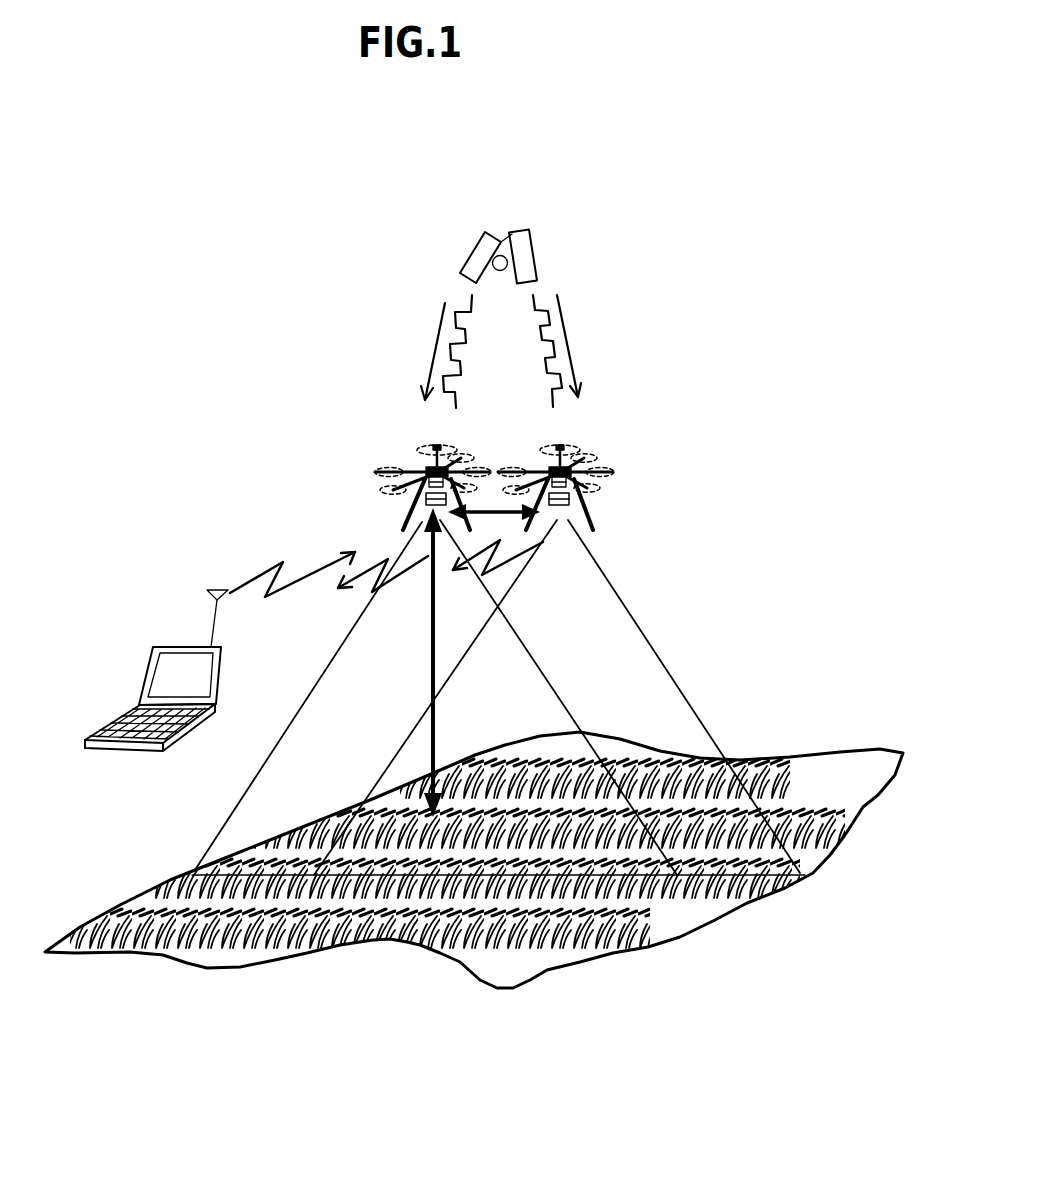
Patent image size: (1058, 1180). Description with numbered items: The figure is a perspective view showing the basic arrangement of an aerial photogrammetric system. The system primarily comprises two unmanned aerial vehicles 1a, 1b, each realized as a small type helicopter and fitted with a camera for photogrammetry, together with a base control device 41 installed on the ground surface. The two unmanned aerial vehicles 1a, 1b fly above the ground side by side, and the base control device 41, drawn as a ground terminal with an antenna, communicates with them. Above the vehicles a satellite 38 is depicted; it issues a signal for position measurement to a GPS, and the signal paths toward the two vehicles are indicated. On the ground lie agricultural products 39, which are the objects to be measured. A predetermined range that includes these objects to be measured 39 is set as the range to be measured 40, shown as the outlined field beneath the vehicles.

The unmanned aerial vehicle 1a is at (376, 439).
The unmanned aerial vehicle 1b is at (637, 450).
The satellite 38 is at (537, 249).
The agricultural products 39 is at (675, 903).
The range to be measured 40 is at (649, 740).
The base control device 41 is at (122, 751).